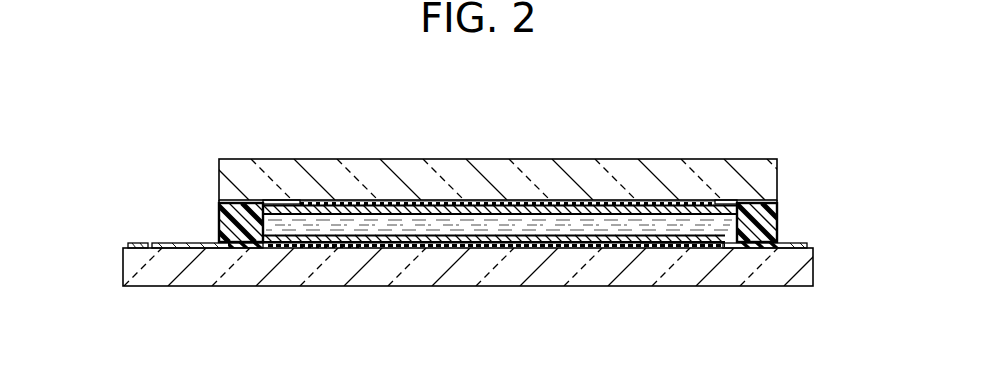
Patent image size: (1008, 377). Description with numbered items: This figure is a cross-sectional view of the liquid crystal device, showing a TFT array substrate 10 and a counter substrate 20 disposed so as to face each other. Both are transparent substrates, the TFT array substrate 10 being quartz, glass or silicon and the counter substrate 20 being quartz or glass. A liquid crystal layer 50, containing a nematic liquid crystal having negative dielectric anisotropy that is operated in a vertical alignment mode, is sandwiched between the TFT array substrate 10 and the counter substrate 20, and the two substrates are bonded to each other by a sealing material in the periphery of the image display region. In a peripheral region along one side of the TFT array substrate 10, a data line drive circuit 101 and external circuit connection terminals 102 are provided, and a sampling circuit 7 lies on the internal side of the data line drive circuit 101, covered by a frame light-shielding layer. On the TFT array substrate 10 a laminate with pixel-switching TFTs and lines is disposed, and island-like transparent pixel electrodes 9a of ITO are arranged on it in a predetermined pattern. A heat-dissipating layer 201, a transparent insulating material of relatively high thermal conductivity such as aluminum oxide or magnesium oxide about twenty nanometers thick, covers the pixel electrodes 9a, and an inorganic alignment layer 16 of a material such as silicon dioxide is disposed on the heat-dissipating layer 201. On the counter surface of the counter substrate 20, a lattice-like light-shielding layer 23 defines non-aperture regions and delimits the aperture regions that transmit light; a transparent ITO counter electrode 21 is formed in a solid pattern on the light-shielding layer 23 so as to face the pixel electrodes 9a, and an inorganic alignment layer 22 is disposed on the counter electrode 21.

The TFT array substrate 10 is at (558, 276).
The counter substrate 20 is at (410, 170).
The counter electrode 21 is at (661, 204).
The inorganic alignment layer 22 is at (603, 215).
The light-shielding layer 23 is at (530, 199).
The liquid crystal layer 50 is at (500, 244).
The sampling circuit 7 is at (282, 250).
The pixel electrodes 9a is at (330, 249).
The inorganic alignment layer 16 is at (666, 229).
The data line drive circuit 101 is at (178, 242).
The external circuit connection terminals 102 is at (146, 242).
The heat-dissipating layer 201 is at (788, 242).